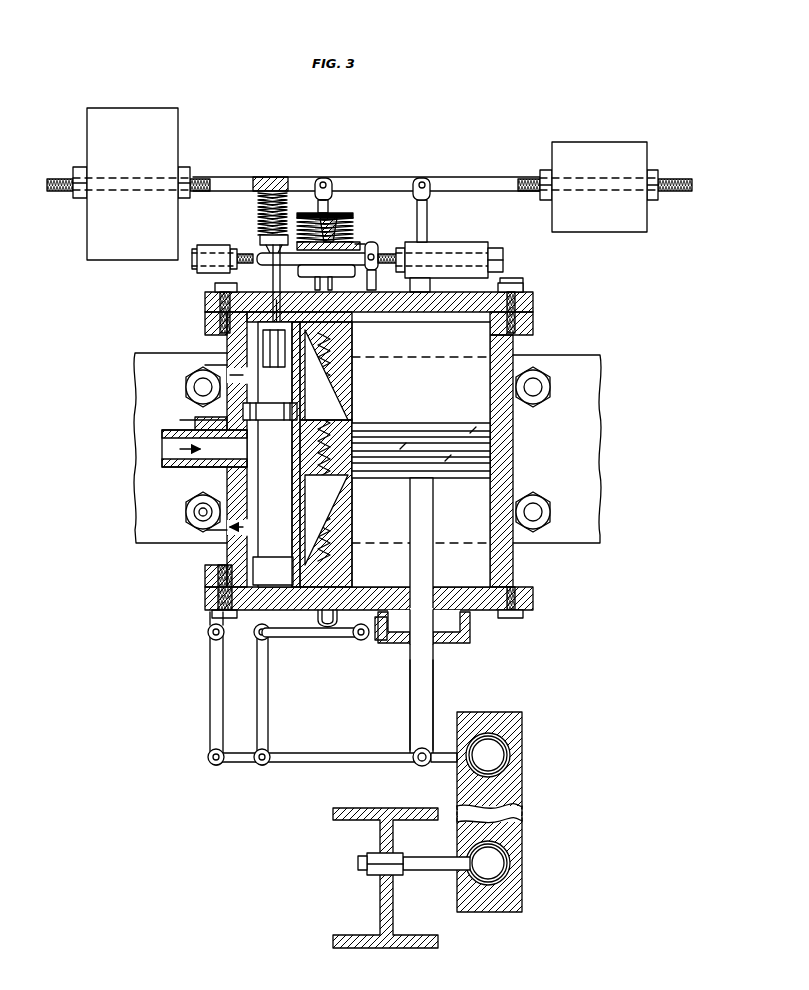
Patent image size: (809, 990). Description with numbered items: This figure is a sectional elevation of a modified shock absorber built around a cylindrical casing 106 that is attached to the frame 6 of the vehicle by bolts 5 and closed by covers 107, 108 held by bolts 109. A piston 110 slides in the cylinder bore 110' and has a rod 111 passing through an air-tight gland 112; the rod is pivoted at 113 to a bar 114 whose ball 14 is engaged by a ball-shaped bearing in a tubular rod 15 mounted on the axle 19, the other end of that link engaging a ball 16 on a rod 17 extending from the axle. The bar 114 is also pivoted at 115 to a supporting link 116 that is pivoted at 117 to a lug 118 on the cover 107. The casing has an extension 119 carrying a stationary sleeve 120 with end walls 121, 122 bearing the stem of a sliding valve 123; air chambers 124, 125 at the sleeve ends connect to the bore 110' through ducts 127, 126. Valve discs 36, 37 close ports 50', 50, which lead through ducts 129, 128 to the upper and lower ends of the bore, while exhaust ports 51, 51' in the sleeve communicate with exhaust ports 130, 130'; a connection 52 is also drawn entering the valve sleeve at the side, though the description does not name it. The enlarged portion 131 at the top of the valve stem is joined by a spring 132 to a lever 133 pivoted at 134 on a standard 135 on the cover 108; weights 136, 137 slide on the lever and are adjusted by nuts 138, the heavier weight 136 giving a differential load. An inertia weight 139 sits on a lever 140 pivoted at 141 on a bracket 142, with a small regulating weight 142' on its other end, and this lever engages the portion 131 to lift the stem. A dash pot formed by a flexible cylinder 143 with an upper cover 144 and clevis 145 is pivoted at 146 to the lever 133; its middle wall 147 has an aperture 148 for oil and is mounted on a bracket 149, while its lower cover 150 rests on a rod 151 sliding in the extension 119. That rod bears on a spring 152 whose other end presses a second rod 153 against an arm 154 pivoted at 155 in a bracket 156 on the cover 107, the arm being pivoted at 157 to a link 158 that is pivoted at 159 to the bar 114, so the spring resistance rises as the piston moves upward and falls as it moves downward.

The bolts 5 is at (540, 387).
The frame 6 is at (600, 410).
The ball 14 is at (510, 755).
The tubular rod 15 is at (522, 793).
The ball 16 is at (510, 863).
The rod 17 is at (435, 870).
The axle 19 is at (352, 935).
The valve disc 36 is at (195, 426).
The valve disc 37 is at (199, 512).
The port 50 is at (163, 457).
The port 50' is at (162, 448).
The exhaust port 51 is at (155, 520).
The exhaust port 51' is at (152, 387).
The inlet pipe 52 is at (162, 451).
The cylindrical casing 106 is at (513, 345).
The cover 107 is at (530, 607).
The cover 108 is at (525, 308).
The bolts 109 is at (523, 617).
The piston 110 is at (421, 440).
The cylinder bore 110' is at (527, 606).
The rod 111 is at (433, 668).
The gland 112 is at (470, 640).
The pivot 113 is at (414, 762).
The bar 114 is at (330, 753).
The pivot 115 is at (210, 762).
The supporting link 116 is at (210, 702).
The pivot 117 is at (208, 634).
The lug 118 is at (212, 614).
The extension 119 is at (215, 333).
The stationary sleeve 120 is at (227, 348).
The end wall 121 is at (215, 575).
The end wall 122 is at (350, 339).
The sliding valve 123 is at (273, 271).
The air chamber 124 is at (220, 310).
The air chamber 125 is at (222, 600).
The duct 126 is at (300, 576).
The duct 127 is at (350, 325).
The duct 128 is at (345, 560).
The duct 129 is at (352, 354).
The exhaust port 130 is at (172, 549).
The exhaust port 130' is at (160, 354).
The enlarged portion 131 is at (262, 238).
The spring 132 is at (258, 206).
The lever 133 is at (362, 177).
The pivot 134 is at (428, 178).
The standard 135 is at (428, 222).
The weight 136 is at (140, 108).
The weight 137 is at (608, 136).
The nuts 138 is at (78, 170).
The weight 139 is at (490, 250).
The lever 140 is at (503, 259).
The pivot 141 is at (374, 250).
The bracket 142 is at (395, 249).
The regulating weight 142' is at (206, 260).
The flexible cylinder 143 is at (365, 244).
The upper cover 144 is at (336, 213).
The clevis 145 is at (317, 178).
The pivot 146 is at (323, 178).
The middle wall 147 is at (340, 240).
The aperture 148 is at (326, 240).
The bracket 149 is at (370, 242).
The lower cover 150 is at (332, 284).
The rod 151 is at (315, 284).
The spring 152 is at (352, 395).
The second rod 153 is at (318, 626).
The arm 154 is at (292, 640).
The pivot 155 is at (358, 640).
The bracket 156 is at (380, 642).
The pivot 157 is at (258, 638).
The link 158 is at (268, 699).
The pivot 159 is at (260, 764).